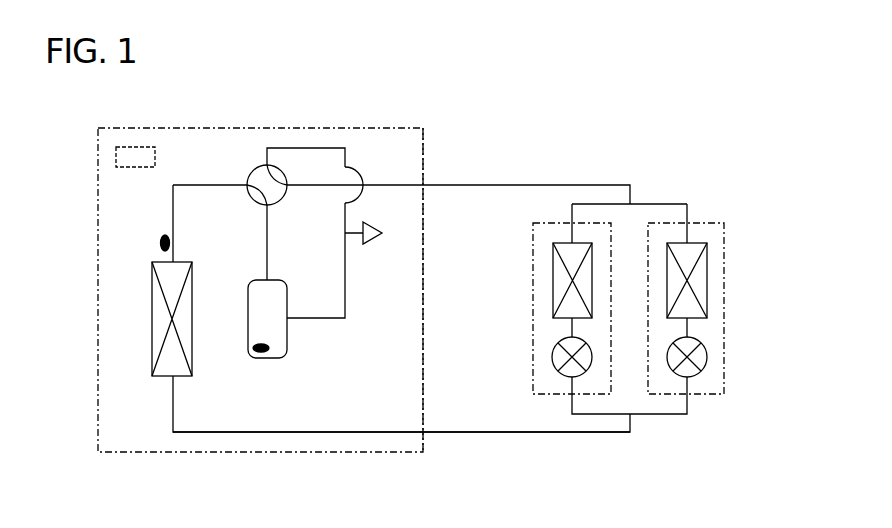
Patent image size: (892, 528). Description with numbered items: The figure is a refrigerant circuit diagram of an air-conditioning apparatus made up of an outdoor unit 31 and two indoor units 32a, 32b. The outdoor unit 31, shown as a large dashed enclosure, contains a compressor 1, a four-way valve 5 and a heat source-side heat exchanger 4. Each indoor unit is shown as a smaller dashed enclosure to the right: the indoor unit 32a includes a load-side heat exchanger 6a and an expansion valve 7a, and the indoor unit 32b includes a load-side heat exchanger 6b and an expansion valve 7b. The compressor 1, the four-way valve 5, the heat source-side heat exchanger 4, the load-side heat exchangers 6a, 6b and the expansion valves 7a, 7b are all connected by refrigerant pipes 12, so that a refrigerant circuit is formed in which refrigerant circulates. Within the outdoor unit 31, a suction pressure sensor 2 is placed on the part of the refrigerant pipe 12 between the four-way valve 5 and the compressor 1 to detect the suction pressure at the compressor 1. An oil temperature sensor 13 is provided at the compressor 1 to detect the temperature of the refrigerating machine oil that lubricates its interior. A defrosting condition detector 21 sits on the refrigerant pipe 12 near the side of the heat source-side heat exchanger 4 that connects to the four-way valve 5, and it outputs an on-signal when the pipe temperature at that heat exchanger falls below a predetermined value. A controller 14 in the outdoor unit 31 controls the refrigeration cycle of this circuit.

The compressor 1 is at (288, 340).
The suction pressure sensor 2 is at (373, 236).
The heat source-side heat exchanger 4 is at (152, 300).
The four-way valve 5 is at (250, 172).
The load-side heat exchanger 6a is at (553, 292).
The load-side heat exchanger 6b is at (707, 290).
The expansion valve 7a is at (552, 355).
The expansion valve 7b is at (707, 355).
The refrigerant pipes 12 is at (478, 436).
The oil temperature sensor 13 is at (248, 348).
The controller 14 is at (115, 153).
The defrosting condition detector 21 is at (158, 242).
The outdoor unit 31 is at (423, 152).
The indoor unit 32a is at (535, 240).
The indoor unit 32b is at (724, 242).